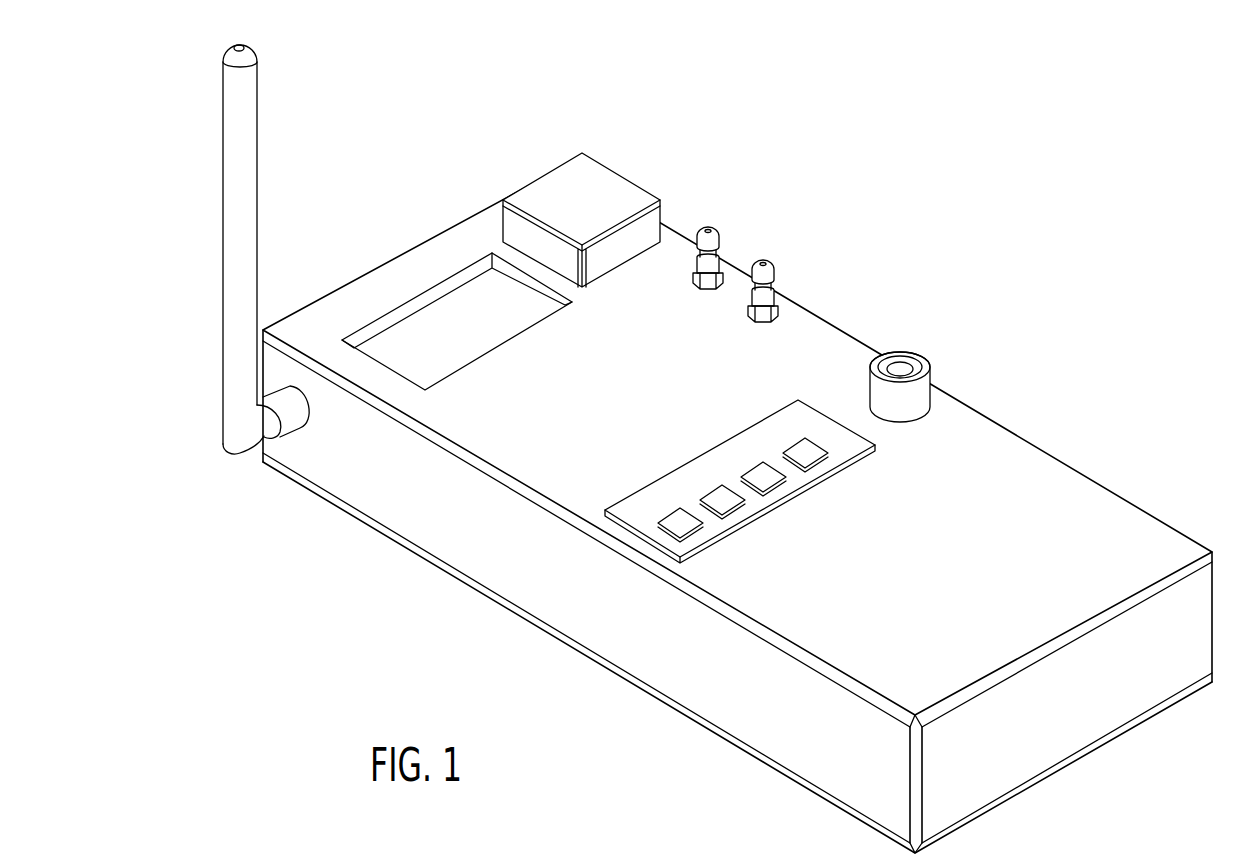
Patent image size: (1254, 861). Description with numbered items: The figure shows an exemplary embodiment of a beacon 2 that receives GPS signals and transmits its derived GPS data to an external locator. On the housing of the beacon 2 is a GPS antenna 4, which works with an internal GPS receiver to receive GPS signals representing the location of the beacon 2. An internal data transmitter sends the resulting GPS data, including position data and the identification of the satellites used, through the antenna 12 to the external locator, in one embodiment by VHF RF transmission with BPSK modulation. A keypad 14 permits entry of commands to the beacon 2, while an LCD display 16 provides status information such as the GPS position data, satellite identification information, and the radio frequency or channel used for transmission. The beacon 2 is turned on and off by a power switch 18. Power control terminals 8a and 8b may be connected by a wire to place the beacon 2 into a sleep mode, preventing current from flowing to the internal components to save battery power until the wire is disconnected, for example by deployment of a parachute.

The beacon 2 is at (1028, 372).
The GPS antenna 4 is at (587, 172).
The power control terminal 8a is at (713, 228).
The power control terminal 8b is at (770, 260).
The antenna 12 is at (233, 178).
The keypad 14 is at (630, 512).
The LCD display 16 is at (436, 317).
The power switch 18 is at (902, 365).